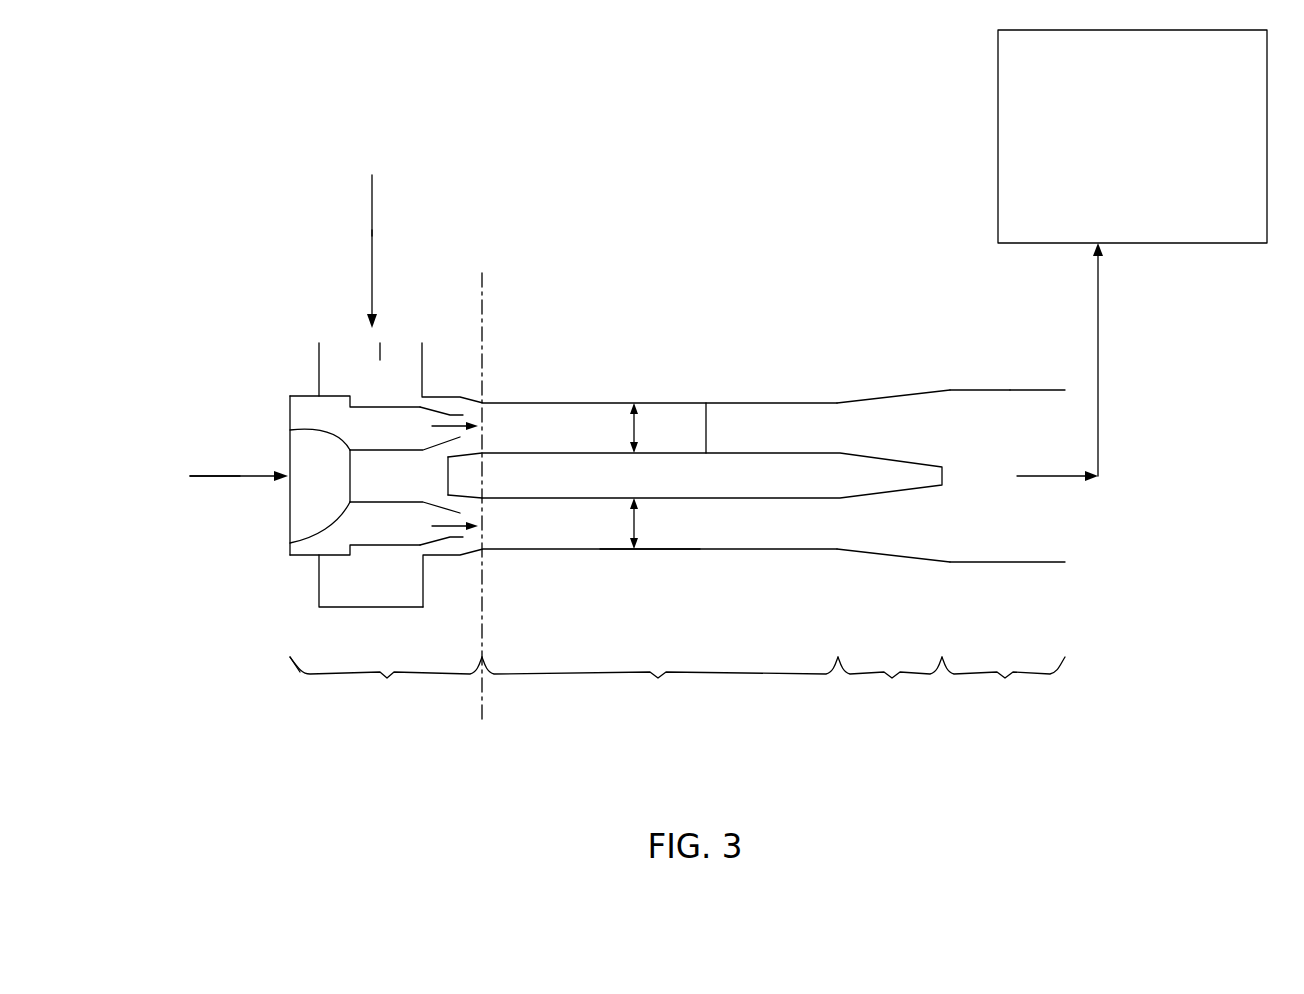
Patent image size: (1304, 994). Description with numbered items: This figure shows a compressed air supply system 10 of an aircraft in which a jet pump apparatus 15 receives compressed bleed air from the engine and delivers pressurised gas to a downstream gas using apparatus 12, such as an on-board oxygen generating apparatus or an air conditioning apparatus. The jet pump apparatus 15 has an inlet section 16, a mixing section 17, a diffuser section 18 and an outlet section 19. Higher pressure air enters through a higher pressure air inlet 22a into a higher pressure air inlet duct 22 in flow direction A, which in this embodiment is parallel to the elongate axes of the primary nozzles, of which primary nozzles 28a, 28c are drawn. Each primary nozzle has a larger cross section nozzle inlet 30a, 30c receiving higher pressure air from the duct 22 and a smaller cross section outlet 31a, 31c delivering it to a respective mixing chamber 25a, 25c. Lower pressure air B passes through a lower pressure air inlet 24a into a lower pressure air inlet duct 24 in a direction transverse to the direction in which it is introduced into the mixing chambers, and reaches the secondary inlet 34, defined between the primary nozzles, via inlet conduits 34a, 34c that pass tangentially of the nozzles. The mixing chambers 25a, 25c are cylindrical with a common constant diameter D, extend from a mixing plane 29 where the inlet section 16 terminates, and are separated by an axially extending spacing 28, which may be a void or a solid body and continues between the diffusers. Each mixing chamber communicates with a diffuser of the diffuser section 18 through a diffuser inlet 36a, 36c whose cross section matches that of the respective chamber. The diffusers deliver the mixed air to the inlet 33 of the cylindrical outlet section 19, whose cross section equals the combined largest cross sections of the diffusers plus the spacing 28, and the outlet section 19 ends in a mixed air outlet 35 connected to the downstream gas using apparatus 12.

The compressed air supply system 10 is at (569, 703).
The downstream gas using apparatus 12 is at (998, 158).
The jet pump apparatus 15 is at (657, 385).
The inlet section 16 is at (386, 680).
The mixing section 17 is at (660, 680).
The diffuser section 18 is at (890, 679).
The outlet section 19 is at (1003, 679).
The higher pressure air inlet duct 22 is at (290, 553).
The higher pressure air inlet 22a is at (288, 487).
The lower pressure air inlet duct 24 is at (343, 360).
The lower pressure air inlet 24a is at (403, 347).
The mixing chamber 25a is at (756, 428).
The mixing chamber 25c is at (703, 530).
The axially extending spacing 28 is at (695, 475).
The primary nozzle 28a is at (427, 412).
The primary nozzle 28c is at (425, 533).
The mixing plane 29 is at (483, 300).
The nozzle inlet 30a is at (290, 430).
The nozzle inlet 30c is at (292, 538).
The nozzle outlet 31a is at (450, 415).
The nozzle outlet 31c is at (460, 513).
The outlet section inlet 33 is at (948, 391).
The secondary inlet 34 is at (405, 475).
The inlet conduit 34a is at (483, 447).
The inlet conduit 34c is at (453, 543).
The mixed air outlet 35 is at (1065, 390).
The diffuser inlet 36a is at (837, 402).
The diffuser inlet 36c is at (838, 551).
The higher pressure air flow direction A is at (229, 473).
The lower pressure air flow direction B is at (372, 233).
The mixing chamber diameter D is at (642, 476).